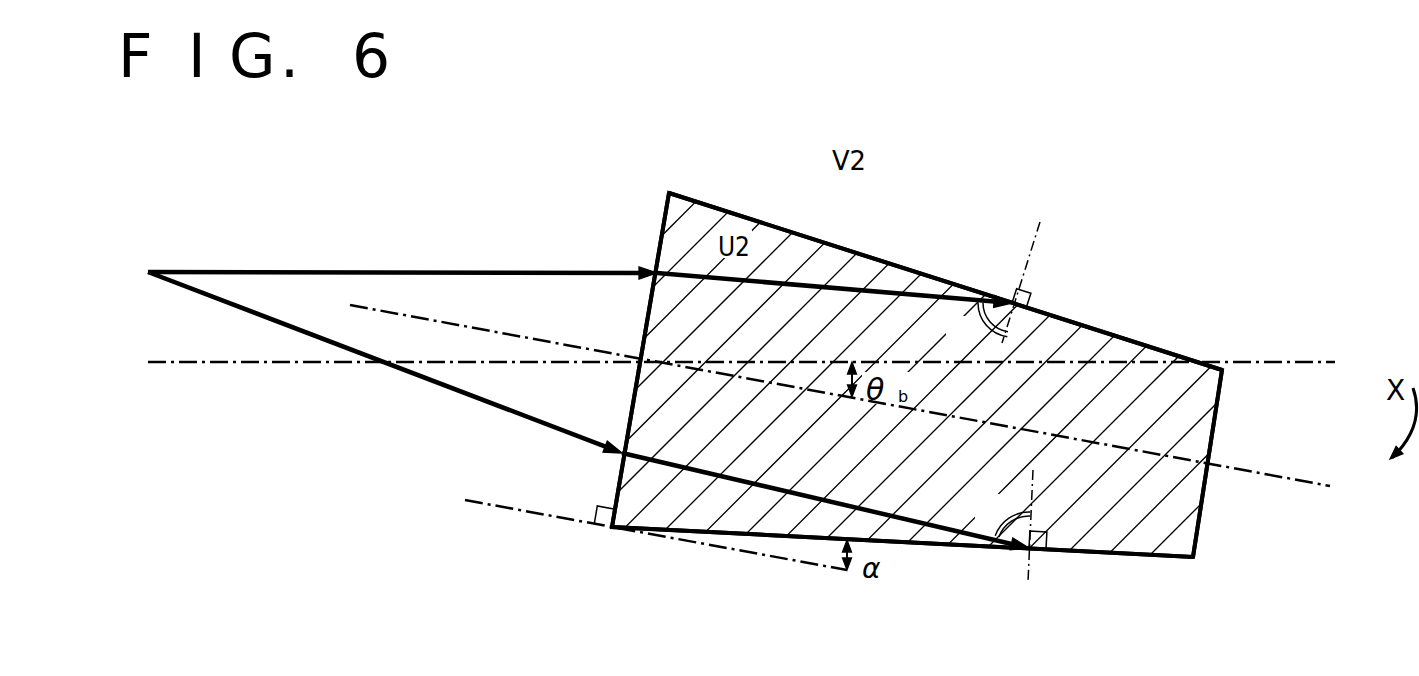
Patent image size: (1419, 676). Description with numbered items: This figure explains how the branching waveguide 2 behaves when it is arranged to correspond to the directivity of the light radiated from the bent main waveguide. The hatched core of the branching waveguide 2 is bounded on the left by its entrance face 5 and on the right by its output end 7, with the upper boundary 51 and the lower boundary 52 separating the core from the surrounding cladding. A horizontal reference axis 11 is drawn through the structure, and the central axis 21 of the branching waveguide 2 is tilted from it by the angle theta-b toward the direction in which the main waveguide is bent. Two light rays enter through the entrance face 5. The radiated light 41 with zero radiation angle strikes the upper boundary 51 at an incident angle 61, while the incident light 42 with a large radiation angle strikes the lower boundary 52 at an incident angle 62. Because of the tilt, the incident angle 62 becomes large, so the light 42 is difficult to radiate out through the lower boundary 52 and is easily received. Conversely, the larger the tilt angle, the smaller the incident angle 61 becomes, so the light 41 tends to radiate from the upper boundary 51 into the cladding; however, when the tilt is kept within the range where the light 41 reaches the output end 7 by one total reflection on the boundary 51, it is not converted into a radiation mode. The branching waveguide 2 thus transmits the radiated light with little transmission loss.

The branching waveguide 2 is at (722, 210).
The entrance surface 5 is at (660, 236).
The output end 7 is at (1200, 498).
The optical axis 11 is at (1277, 358).
The central axis 21 is at (1288, 472).
The radiated light 41 is at (478, 270).
The incident light 42 is at (470, 393).
The upper boundary 51 is at (925, 275).
The lower boundary 52 is at (958, 544).
The incident angle 61 is at (983, 310).
The incident angle 62 is at (1008, 522).